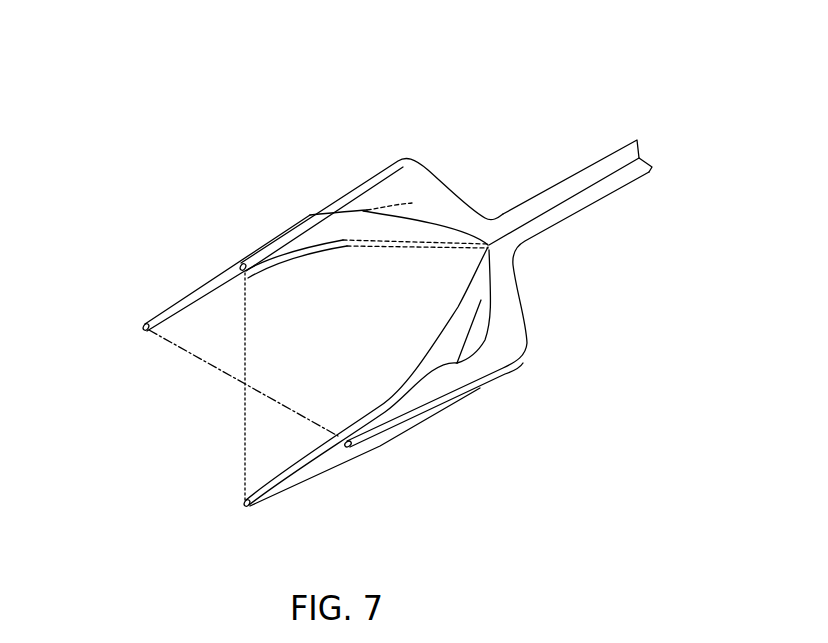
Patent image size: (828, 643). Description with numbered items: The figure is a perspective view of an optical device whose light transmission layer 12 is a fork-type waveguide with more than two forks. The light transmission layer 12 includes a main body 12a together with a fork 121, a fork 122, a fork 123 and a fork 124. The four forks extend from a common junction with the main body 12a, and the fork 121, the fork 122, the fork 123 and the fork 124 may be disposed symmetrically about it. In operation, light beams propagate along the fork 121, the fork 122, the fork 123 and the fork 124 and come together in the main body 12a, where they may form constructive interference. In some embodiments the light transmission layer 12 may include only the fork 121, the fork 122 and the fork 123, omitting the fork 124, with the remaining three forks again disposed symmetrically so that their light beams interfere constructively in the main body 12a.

The light transmission layer 12 is at (492, 124).
The main body 12a is at (608, 195).
The fork 121 is at (170, 305).
The fork 122 is at (443, 403).
The fork 123 is at (296, 230).
The fork 124 is at (298, 476).